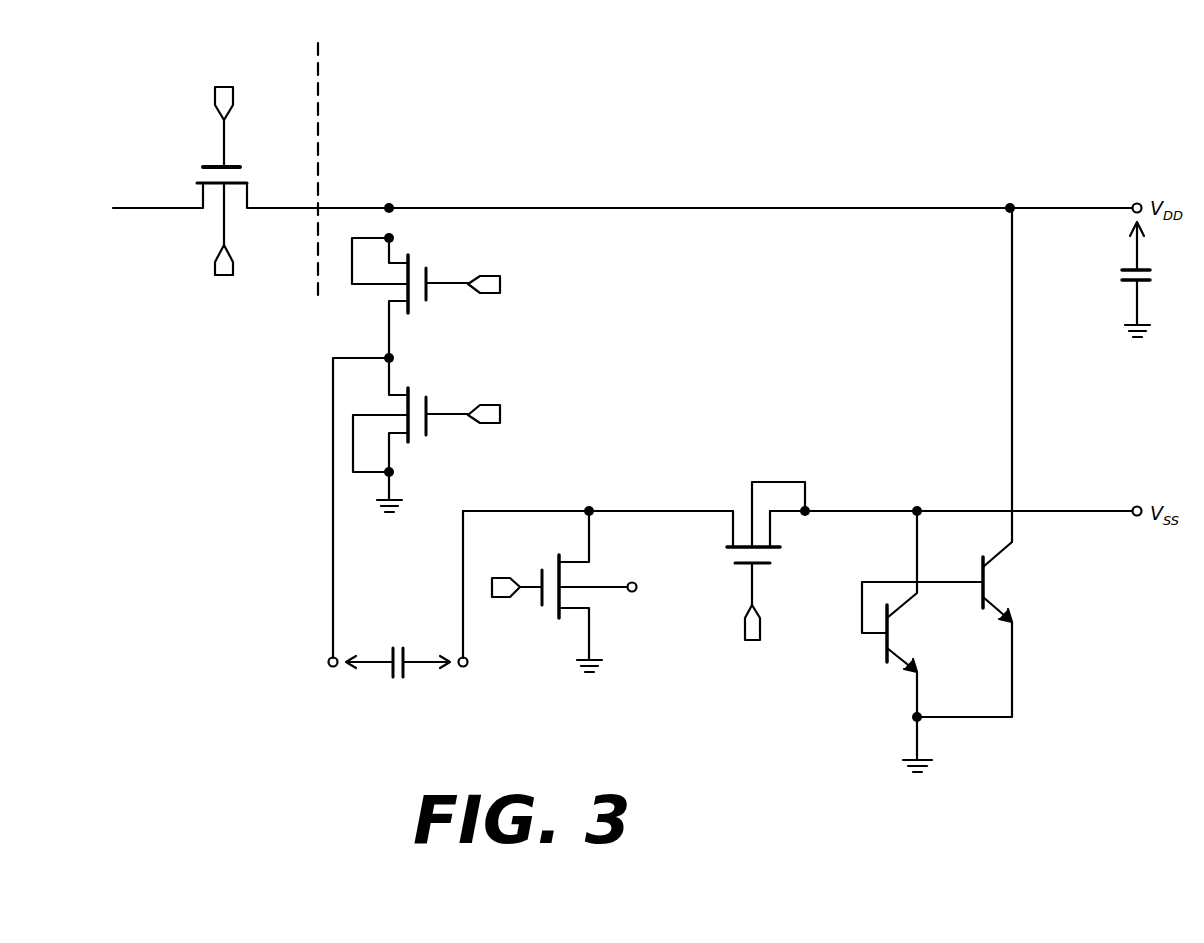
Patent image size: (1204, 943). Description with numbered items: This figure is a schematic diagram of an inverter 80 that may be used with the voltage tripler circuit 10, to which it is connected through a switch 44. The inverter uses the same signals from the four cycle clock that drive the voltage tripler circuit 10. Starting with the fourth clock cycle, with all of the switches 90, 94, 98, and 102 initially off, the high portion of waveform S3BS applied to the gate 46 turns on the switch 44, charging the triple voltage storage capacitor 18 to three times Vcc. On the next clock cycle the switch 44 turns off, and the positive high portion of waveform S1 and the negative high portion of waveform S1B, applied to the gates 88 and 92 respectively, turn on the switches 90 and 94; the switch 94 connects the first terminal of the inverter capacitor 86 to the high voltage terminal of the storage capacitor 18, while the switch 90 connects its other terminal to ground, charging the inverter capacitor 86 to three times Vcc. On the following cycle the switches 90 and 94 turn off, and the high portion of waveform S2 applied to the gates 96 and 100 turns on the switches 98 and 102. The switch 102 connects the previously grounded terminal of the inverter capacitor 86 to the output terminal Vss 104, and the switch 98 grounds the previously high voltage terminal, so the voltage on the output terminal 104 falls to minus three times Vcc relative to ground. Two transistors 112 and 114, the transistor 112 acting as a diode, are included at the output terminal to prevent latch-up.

The voltage tripler circuit 10 is at (197, 355).
The inverter 80 is at (578, 110).
The switch 44 is at (233, 213).
The gate 46 is at (215, 100).
The gate 92 is at (424, 268).
The switch 94 is at (490, 276).
The gate 96 is at (424, 397).
The switch 98 is at (490, 405).
The inverter capacitor C2 86 is at (395, 678).
The gate 88 is at (540, 606).
The switch 90 is at (548, 620).
The gate 100 is at (737, 566).
The switch 102 is at (788, 556).
The transistor 112 is at (897, 642).
The transistor 114 is at (995, 583).
The triple voltage storage capacitor 18 is at (1120, 276).
The output terminal Vss 104 is at (1137, 506).